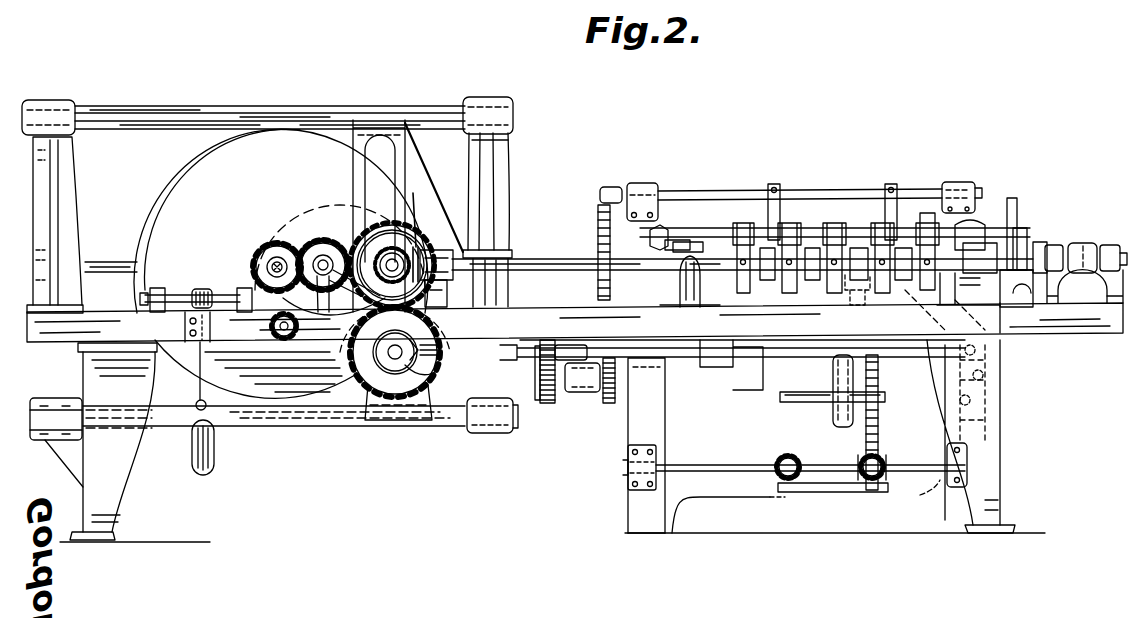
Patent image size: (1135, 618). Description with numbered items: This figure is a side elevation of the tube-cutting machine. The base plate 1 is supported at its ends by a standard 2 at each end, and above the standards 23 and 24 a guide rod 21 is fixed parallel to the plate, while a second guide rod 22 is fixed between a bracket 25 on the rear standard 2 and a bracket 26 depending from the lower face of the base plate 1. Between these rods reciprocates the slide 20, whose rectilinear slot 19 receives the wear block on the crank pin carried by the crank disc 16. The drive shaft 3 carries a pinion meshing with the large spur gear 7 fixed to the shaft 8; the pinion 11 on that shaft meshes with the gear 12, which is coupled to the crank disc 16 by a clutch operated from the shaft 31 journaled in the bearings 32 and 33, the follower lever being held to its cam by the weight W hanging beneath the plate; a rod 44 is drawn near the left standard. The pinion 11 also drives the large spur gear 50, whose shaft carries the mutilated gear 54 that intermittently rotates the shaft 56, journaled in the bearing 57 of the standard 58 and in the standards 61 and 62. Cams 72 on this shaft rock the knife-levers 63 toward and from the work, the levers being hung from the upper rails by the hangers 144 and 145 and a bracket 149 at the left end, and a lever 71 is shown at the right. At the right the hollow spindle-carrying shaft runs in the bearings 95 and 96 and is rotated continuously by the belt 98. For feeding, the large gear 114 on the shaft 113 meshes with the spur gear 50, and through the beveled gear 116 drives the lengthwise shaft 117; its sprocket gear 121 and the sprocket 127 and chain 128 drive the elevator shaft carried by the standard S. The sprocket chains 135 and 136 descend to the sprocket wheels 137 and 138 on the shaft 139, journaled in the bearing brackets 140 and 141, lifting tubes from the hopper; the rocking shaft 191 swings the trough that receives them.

The base plate 1 is at (27, 325).
The standard 2 is at (113, 501).
The drive shaft 3 is at (285, 340).
The large spur gear 7 is at (280, 262).
The shaft 8 is at (330, 255).
The pinion 11 is at (312, 238).
The gear 12 is at (253, 250).
The crank disc 16 is at (190, 156).
The rectilinear slot 19 is at (385, 160).
The slide 20 is at (405, 135).
The guide rod 21 is at (155, 104).
The guide rod 22 is at (160, 426).
The standard 23 is at (72, 172).
The standard 24 is at (505, 150).
The bracket 25 is at (50, 432).
The bracket 26 is at (478, 433).
The shaft 31 is at (140, 293).
The bearing 32 is at (162, 288).
The bearing 33 is at (242, 288).
The rod 44 is at (113, 260).
The large spur gear 50 is at (410, 228).
The mutilated gear 54 is at (415, 238).
The shaft 56 is at (560, 245).
The bearing 57 is at (423, 250).
The standard 58 is at (512, 291).
The standard 61 is at (677, 288).
The standard 62 is at (952, 301).
The knife-lever 63 is at (750, 214).
The lever 71 is at (1015, 200).
The cam 72 is at (835, 290).
The bearing 95 is at (1052, 244).
The bearing 96 is at (1126, 234).
The belt 98 is at (1088, 242).
The shaft 113 is at (420, 380).
The large gear 114 is at (390, 400).
The beveled gear 116 is at (430, 365).
The shaft 117 is at (683, 360).
The sprocket gear 121 is at (543, 403).
The sprocket 127 is at (607, 403).
The chain 128 is at (598, 292).
The sprocket chain 135 is at (782, 404).
The sprocket chain 136 is at (878, 418).
The sprocket wheel 137 is at (782, 460).
The sprocket wheel 138 is at (858, 455).
The shaft 139 is at (718, 458).
The bearing bracket 140 is at (626, 479).
The bearing bracket 141 is at (967, 472).
The hanger 144 is at (882, 188).
The hanger 145 is at (743, 196).
The bracket 149 is at (605, 205).
The shaft 191 is at (740, 375).
The standard S is at (714, 498).
The weight W is at (214, 452).